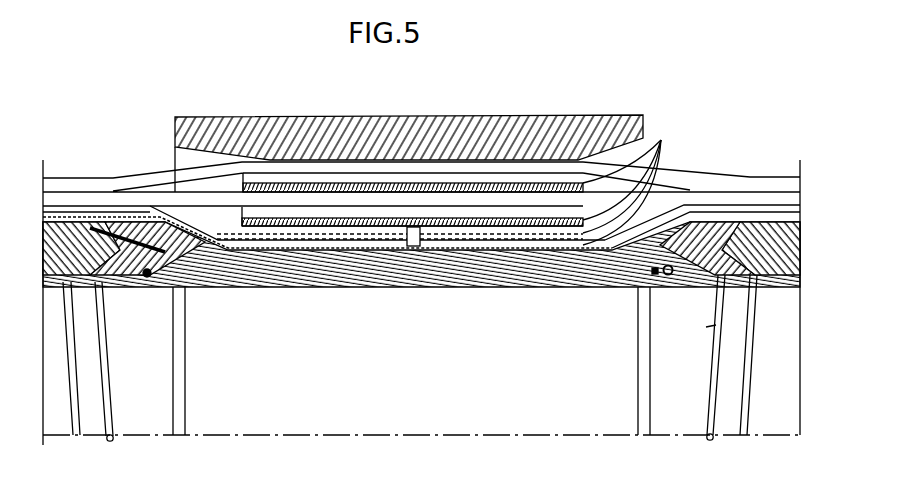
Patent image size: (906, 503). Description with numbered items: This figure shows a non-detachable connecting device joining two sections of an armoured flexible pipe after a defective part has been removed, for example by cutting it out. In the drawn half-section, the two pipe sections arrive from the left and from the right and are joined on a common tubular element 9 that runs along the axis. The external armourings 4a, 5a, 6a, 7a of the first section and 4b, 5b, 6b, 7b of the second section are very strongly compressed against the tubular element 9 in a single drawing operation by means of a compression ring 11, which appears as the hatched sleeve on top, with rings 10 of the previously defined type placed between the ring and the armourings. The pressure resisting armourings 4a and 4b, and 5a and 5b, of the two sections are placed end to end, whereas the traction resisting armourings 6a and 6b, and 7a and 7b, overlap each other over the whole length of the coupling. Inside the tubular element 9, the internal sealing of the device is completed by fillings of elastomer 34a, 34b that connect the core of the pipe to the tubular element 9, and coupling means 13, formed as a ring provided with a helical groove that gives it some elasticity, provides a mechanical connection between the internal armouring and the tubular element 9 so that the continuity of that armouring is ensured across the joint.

The pressure resisting armouring 4a is at (98, 220).
The pressure resisting armouring 4b is at (785, 218).
The pressure resisting armouring 5a is at (80, 212).
The pressure resisting armouring 5b is at (758, 210).
The traction resisting armouring 6a is at (63, 200).
The traction resisting armouring 6b is at (733, 198).
The traction resisting armouring 7a is at (50, 185).
The traction resisting armouring 7b is at (713, 182).
The tubular element 9 is at (432, 275).
The rings 10 is at (627, 182).
The compression ring 11 is at (597, 128).
The coupling means 13 is at (82, 285).
The filling of elastomer 34a is at (118, 285).
The filling of elastomer 34b is at (52, 285).